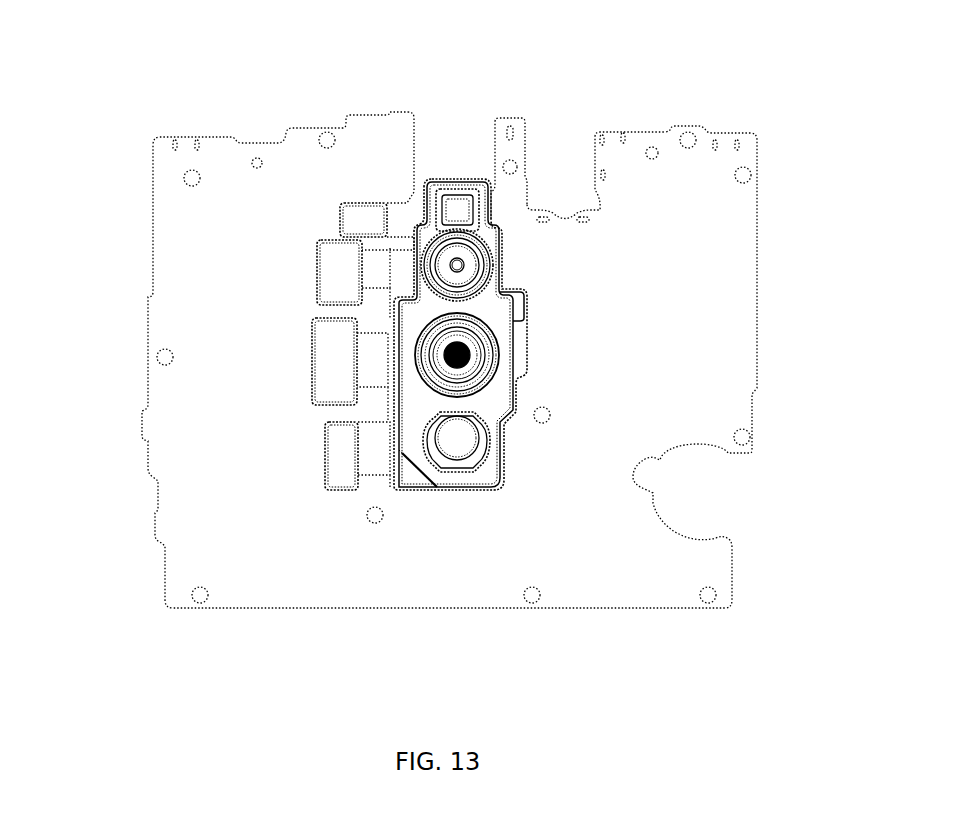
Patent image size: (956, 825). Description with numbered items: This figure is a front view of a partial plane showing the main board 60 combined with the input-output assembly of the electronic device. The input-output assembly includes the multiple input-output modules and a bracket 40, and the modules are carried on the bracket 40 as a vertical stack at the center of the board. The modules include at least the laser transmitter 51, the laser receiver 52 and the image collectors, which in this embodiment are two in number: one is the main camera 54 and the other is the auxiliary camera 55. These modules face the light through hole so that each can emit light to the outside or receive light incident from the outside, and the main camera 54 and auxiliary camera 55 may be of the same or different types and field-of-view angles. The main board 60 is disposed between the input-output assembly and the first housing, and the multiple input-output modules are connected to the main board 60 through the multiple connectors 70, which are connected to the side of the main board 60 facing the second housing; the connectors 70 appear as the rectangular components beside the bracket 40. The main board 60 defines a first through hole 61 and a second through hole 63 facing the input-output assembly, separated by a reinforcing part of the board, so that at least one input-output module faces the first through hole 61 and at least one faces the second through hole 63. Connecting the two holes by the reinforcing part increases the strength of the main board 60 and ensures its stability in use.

The bracket 40 is at (483, 310).
The laser transmitter 51 is at (453, 205).
The laser receiver 52 is at (453, 452).
The main camera 54 is at (463, 363).
The auxiliary camera 55 is at (463, 265).
The main board 60 is at (368, 135).
The first through hole 61 is at (410, 482).
The second through hole 63 is at (460, 128).
The connectors 70 is at (337, 460).